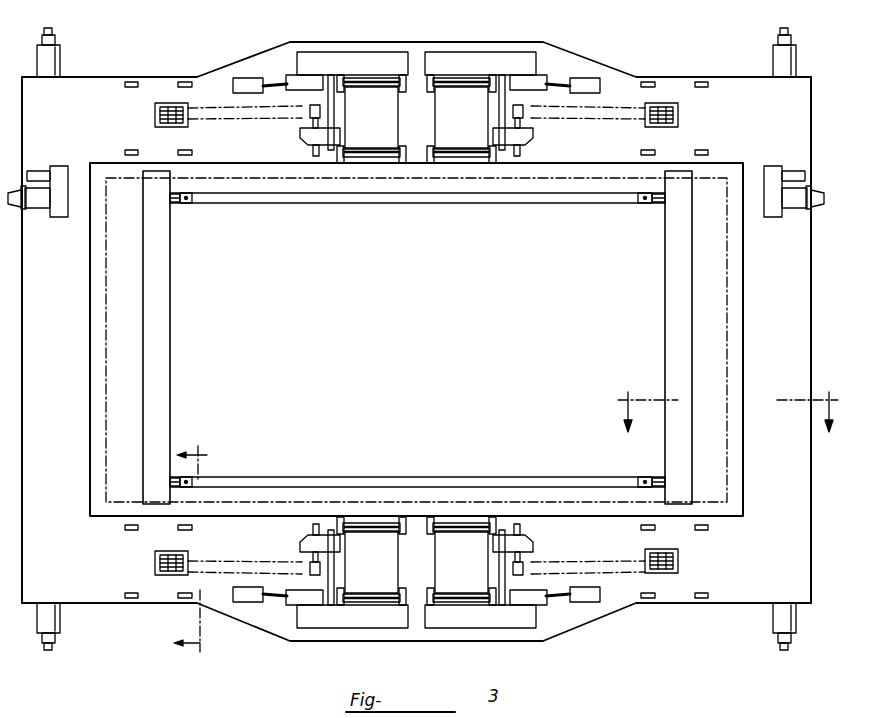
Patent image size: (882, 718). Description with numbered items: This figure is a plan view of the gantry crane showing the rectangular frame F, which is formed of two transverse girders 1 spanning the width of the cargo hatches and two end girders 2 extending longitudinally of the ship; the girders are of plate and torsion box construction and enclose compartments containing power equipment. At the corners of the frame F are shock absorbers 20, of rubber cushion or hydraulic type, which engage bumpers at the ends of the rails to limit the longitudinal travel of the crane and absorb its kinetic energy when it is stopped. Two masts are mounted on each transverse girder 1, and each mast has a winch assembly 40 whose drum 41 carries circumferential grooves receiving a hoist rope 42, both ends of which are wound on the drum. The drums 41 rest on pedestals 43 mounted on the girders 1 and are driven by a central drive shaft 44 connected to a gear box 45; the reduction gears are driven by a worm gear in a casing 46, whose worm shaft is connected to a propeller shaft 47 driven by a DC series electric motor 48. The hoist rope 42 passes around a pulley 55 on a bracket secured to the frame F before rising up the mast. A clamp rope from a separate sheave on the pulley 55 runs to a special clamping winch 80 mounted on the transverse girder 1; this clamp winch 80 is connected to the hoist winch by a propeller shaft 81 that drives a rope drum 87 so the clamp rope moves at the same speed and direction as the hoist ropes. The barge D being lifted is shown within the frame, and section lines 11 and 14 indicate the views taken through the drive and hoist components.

The transverse girder 1 is at (85, 77).
The end girder 2 is at (22, 438).
The section line 11- 11 is at (188, 550).
The section line 14- 14 is at (726, 424).
The shock absorber 20 is at (61, 38).
The winch assembly 40 is at (361, 67).
The drum 41 is at (367, 136).
The hoist rope 42 is at (216, 112).
The pedestal 43 is at (441, 156).
The central drive shaft 44 is at (448, 78).
The gear box 45 is at (341, 51).
The worm gear casing 46 is at (305, 74).
The propeller shaft 47 is at (277, 83).
The electric motor 48 is at (245, 78).
The pulley 55 is at (155, 111).
The clamping winch 80 is at (301, 123).
The propeller shaft 81 is at (334, 113).
The rope drum 87 is at (303, 556).
The die area D is at (409, 331).
The frame F is at (84, 605).